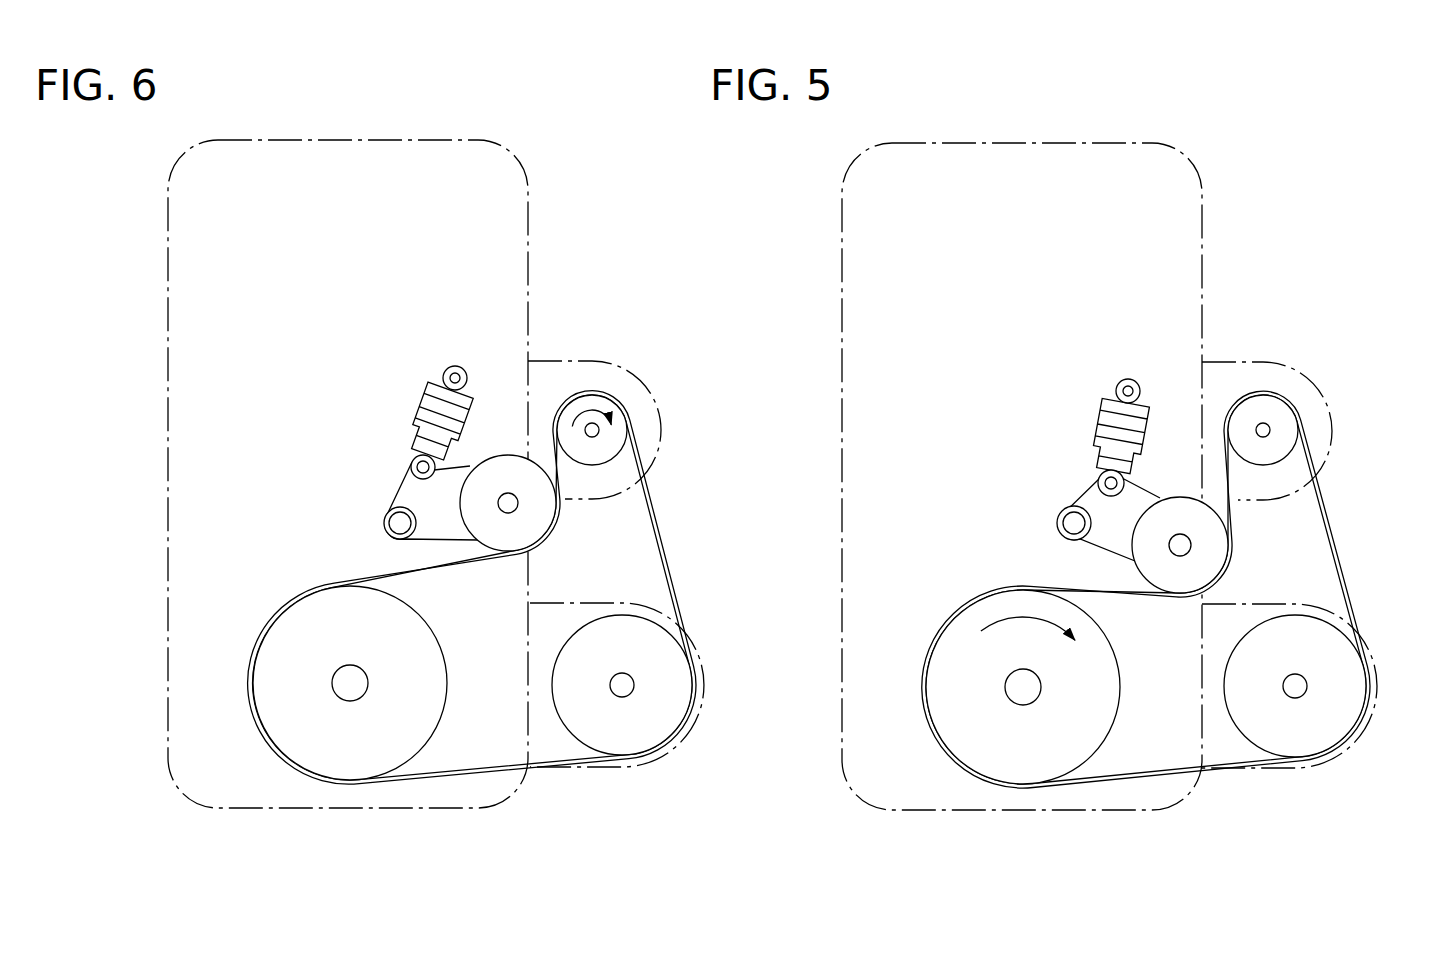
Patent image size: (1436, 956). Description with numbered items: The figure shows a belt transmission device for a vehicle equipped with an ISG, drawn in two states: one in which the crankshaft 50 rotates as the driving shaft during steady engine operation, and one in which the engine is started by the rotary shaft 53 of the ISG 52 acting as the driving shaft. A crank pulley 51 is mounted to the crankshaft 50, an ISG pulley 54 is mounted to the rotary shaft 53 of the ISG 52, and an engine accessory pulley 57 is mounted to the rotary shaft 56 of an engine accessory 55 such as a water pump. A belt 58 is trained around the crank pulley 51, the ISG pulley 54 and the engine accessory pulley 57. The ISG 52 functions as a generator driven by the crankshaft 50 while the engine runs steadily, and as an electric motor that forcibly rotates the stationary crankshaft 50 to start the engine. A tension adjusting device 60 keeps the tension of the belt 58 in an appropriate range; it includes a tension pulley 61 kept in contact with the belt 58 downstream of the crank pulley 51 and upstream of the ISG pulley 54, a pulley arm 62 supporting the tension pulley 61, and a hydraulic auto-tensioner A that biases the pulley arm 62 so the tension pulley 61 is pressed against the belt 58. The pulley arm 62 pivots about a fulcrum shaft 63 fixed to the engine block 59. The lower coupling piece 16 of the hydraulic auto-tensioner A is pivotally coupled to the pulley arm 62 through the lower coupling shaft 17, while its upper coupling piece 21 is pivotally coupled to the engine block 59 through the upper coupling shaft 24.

In FIG. 6, the engine block 59 is at (514, 164).
In FIG. 5, the engine block 59 is at (1192, 166).
In FIG. 6, the ISG 52 is at (645, 390).
In FIG. 5, the ISG 52 is at (1330, 400).
In FIG. 6, the engine accessory 55 is at (700, 718).
In FIG. 5, the engine accessory 55 is at (1372, 715).
In FIG. 6, the belt 58 is at (656, 522).
In FIG. 5, the belt 58 is at (1330, 520).
In FIG. 6, the crank pulley 51 is at (275, 646).
In FIG. 5, the crank pulley 51 is at (950, 646).
In FIG. 6, the crankshaft 50 is at (340, 690).
In FIG. 5, the crankshaft 50 is at (1015, 690).
In FIG. 6, the engine accessory pulley 57 is at (650, 735).
In FIG. 5, the engine accessory pulley 57 is at (1318, 732).
In FIG. 6, the rotary shaft 56 is at (619, 692).
In FIG. 5, the rotary shaft 56 is at (1295, 694).
In FIG. 6, the ISG pulley 54 is at (585, 398).
In FIG. 5, the ISG pulley 54 is at (1270, 403).
In FIG. 6, the rotary shaft 53 is at (598, 433).
In FIG. 5, the rotary shaft 53 is at (1259, 426).
In FIG. 6, the tension pulley 61 is at (545, 518).
In FIG. 5, the tension pulley 61 is at (1220, 555).
In FIG. 6, the tension adjusting device 60 is at (375, 523).
In FIG. 5, the tension adjusting device 60 is at (1056, 533).
In FIG. 6, the pulley arm 62 is at (432, 535).
In FIG. 5, the pulley arm 62 is at (1101, 543).
In FIG. 6, the fulcrum shaft 63 is at (384, 524).
In FIG. 5, the fulcrum shaft 63 is at (1058, 530).
In FIG. 6, the lower coupling piece 16 is at (411, 455).
In FIG. 5, the lower coupling piece 16 is at (1102, 478).
In FIG. 6, the lower coupling shaft 17 is at (410, 467).
In FIG. 5, the lower coupling shaft 17 is at (1097, 487).
In FIG. 6, the upper coupling piece 21 is at (443, 380).
In FIG. 5, the upper coupling piece 21 is at (1122, 395).
In FIG. 6, the upper coupling shaft 24 is at (456, 368).
In FIG. 5, the upper coupling shaft 24 is at (1130, 381).
In FIG. 6, the hydraulic auto-tensioner A is at (389, 385).
In FIG. 5, the hydraulic auto-tensioner A is at (1069, 393).